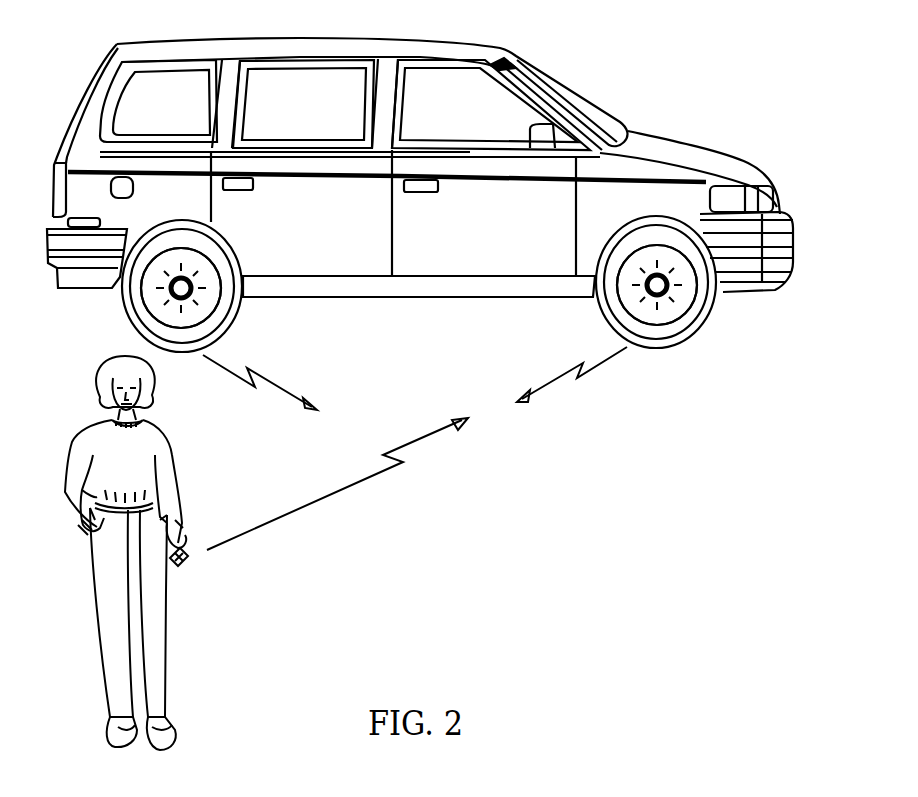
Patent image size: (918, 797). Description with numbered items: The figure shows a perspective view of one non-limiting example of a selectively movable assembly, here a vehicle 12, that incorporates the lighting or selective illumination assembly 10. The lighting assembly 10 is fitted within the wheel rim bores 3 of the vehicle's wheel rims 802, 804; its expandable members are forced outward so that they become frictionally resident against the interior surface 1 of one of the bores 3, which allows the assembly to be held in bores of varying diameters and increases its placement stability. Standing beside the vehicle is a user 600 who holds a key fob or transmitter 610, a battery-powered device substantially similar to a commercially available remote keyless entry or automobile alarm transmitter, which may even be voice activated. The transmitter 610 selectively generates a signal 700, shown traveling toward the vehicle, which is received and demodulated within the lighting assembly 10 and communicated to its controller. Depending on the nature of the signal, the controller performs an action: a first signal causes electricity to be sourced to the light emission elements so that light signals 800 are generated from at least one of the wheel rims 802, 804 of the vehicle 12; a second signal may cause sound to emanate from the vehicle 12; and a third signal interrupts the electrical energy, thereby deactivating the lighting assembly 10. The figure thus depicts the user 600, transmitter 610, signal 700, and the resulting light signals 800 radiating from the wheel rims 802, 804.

The vehicle 12 is at (502, 47).
The interior surface 1 is at (177, 280).
The wheel rim bores 3 is at (183, 301).
The lighting assembly 10 is at (190, 297).
The wheel rim 802 is at (672, 292).
The wheel rim 804 is at (205, 291).
The light signals 800 is at (276, 378).
The signal 700 is at (407, 443).
The user 600 is at (177, 463).
The key fob or transmitter 610 is at (190, 560).